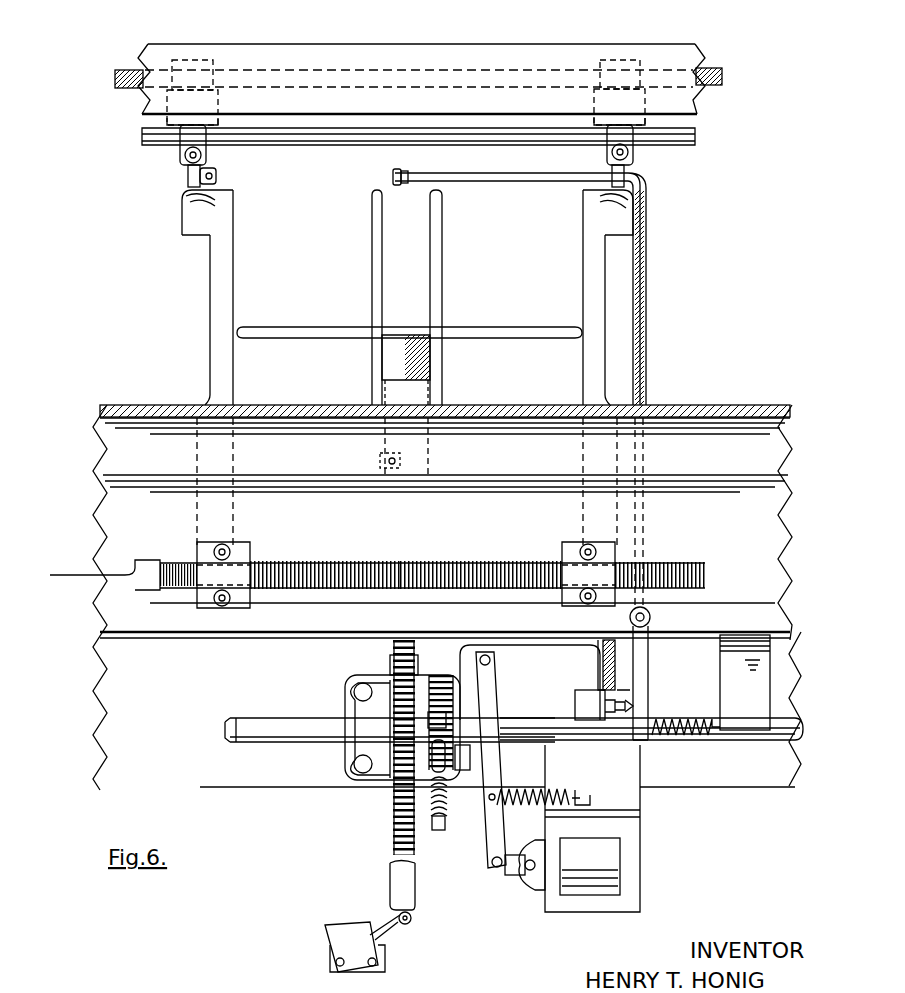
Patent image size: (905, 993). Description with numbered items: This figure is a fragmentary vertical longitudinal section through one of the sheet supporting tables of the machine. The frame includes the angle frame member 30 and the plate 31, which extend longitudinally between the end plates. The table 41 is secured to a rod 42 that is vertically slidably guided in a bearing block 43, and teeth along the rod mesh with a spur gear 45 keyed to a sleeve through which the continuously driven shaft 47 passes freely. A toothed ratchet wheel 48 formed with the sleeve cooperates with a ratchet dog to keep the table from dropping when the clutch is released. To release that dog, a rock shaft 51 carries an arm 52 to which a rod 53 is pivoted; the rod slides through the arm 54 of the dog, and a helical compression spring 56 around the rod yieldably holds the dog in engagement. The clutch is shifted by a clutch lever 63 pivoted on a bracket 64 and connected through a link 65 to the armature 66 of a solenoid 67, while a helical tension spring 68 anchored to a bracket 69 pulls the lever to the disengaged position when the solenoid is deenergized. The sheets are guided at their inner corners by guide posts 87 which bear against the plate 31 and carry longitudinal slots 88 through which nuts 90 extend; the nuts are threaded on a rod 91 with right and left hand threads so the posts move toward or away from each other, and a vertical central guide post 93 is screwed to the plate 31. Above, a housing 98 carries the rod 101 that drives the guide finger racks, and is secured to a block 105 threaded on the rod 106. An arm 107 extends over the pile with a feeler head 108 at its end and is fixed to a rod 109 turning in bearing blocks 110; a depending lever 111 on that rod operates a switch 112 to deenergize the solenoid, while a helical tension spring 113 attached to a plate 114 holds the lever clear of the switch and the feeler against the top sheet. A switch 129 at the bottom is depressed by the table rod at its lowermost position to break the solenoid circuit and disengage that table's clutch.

The angle frame member 30 is at (178, 440).
The plate 31 is at (309, 507).
The sheet supporting table 41 is at (285, 330).
The rod 42 is at (395, 825).
The bearing block 43 is at (350, 702).
The spur gear 45 is at (398, 668).
The shaft 47 is at (268, 730).
The toothed ratchet wheel 48 is at (440, 690).
The rock shaft 51 is at (612, 735).
The arm 52 is at (442, 722).
The rod 53 is at (442, 765).
The arm of ratchet dog 54 is at (445, 823).
The helical compression spring 56 is at (447, 800).
The clutch lever 63 is at (495, 767).
The bracket 64 is at (490, 650).
The link 65 is at (515, 877).
The armature 66 is at (530, 890).
The solenoid 67 is at (578, 880).
The helical tension spring 68 is at (553, 792).
The bracket 69 is at (582, 800).
The guide post 87 is at (212, 214).
The longitudinal slot 88 is at (110, 585).
The nut 90 is at (210, 552).
The rod 91 is at (175, 570).
The vertical central guide post 93 is at (437, 297).
The housing 98 is at (208, 120).
The rod 101 is at (695, 136).
The block 105 is at (193, 72).
The rod 106 is at (722, 78).
The arm 107 is at (540, 178).
The feeler head 108 is at (395, 174).
The rod 109 is at (652, 615).
The bearing block 110 is at (660, 628).
The lever 111 is at (640, 686).
The switch 112 is at (592, 705).
The helical tension spring 113 is at (678, 720).
The plate 114 is at (735, 667).
The switch 129 is at (350, 935).